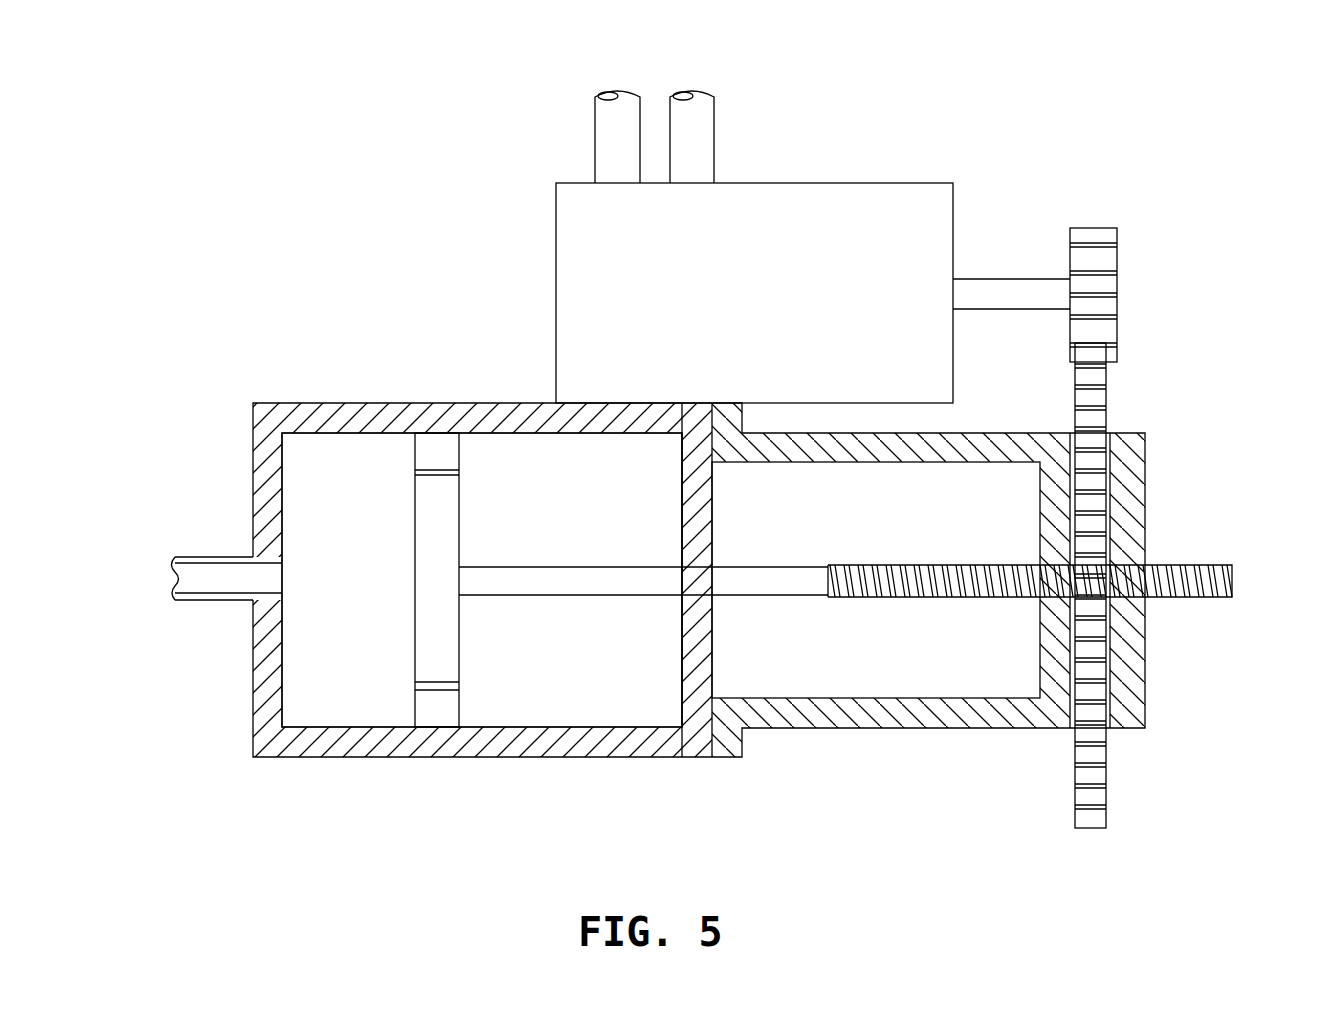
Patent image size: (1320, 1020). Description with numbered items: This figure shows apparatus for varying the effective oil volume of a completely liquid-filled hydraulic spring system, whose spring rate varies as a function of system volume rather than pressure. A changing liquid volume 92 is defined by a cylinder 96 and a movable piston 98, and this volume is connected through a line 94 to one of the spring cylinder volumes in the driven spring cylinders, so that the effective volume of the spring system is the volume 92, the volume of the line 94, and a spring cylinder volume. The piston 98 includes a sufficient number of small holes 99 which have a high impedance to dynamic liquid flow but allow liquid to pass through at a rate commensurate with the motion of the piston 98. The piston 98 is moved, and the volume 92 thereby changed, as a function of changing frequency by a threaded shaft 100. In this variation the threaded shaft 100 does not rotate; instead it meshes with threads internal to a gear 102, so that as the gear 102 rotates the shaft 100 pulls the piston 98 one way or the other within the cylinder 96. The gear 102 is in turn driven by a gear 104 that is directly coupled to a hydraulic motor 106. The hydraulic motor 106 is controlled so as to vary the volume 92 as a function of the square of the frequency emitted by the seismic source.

The liquid volume 92 is at (362, 587).
The line 94 is at (205, 566).
The cylinder 96 is at (327, 757).
The movable piston 98 is at (415, 506).
The small holes 99 is at (459, 686).
The threaded shaft 100 is at (1203, 566).
The gear 102 is at (1095, 790).
The gear 104 is at (1112, 252).
The hydraulic motor 106 is at (792, 226).